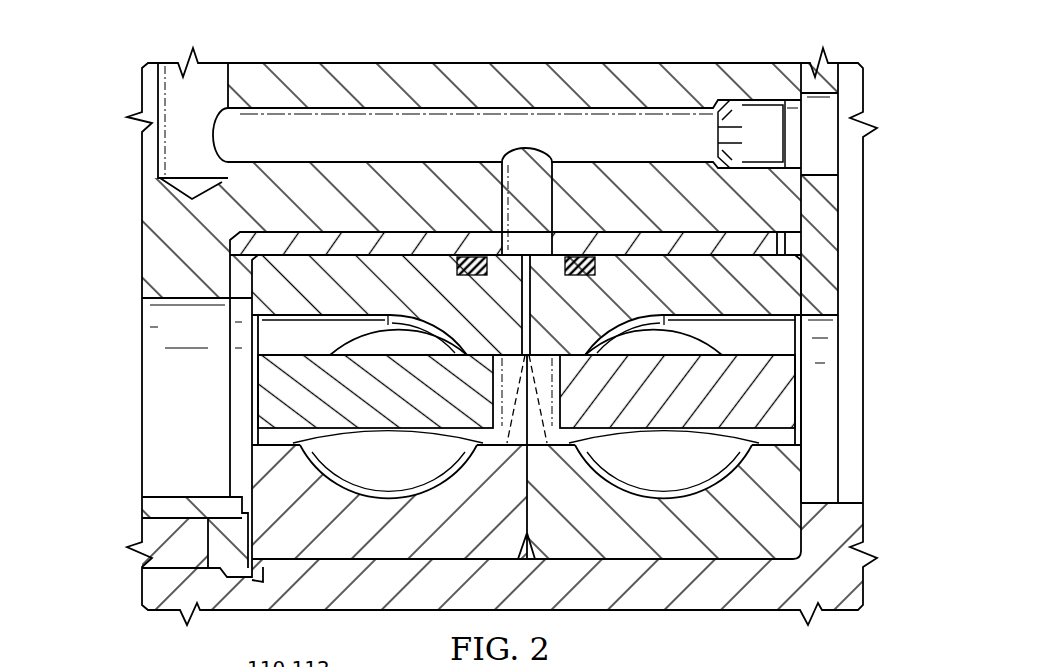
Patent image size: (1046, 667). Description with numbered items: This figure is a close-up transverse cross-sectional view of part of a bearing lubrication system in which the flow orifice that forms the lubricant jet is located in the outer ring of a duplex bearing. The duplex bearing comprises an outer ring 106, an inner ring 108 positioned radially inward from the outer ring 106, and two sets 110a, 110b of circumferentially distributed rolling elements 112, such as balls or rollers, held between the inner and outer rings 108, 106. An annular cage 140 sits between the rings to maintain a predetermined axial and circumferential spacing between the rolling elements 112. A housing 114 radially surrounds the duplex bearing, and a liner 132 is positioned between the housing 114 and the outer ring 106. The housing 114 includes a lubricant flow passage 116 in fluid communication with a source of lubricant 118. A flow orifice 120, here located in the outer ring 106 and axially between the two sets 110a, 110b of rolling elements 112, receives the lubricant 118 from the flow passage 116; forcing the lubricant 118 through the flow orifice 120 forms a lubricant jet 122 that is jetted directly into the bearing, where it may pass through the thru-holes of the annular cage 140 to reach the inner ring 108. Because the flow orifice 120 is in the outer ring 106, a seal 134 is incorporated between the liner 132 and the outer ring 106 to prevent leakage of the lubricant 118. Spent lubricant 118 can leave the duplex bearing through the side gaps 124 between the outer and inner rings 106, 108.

The outer ring 106 is at (750, 257).
The inner ring 108 is at (263, 458).
The first set of rolling elements 110a is at (343, 468).
The second set of rolling elements 110b is at (717, 475).
The rolling elements 112 is at (527, 493).
The housing 114 is at (150, 258).
The lubricant flow passage 116 is at (352, 128).
The lubricant 118 is at (504, 225).
The flow orifice 120 is at (522, 270).
The lubricant jet 122 is at (535, 378).
The side gaps 124 is at (260, 337).
The liner 132 is at (358, 246).
The seal 134 is at (455, 262).
The annular cage 140 is at (417, 420).